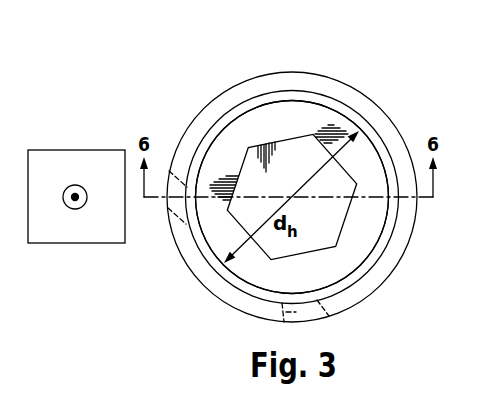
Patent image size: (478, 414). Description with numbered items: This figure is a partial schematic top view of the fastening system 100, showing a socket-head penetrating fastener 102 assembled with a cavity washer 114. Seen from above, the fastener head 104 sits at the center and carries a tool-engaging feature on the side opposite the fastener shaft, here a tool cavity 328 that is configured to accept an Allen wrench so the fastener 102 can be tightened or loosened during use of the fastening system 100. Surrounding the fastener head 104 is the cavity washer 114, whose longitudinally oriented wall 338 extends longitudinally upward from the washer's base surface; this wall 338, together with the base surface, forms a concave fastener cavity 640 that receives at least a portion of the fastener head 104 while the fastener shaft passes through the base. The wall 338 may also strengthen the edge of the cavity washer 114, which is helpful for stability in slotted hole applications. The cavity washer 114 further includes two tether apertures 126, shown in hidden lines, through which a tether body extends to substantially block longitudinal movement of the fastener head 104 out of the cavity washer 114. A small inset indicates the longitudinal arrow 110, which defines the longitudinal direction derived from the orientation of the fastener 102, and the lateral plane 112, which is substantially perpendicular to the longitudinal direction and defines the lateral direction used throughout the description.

The fastening system 100 is at (292, 188).
The penetrating fastener 102 is at (376, 265).
The fastener head 104 is at (364, 158).
The longitudinal arrow 110 is at (75, 195).
The lateral plane 112 is at (113, 238).
The cavity washer 114 is at (233, 74).
The tether apertures 126 is at (178, 214).
The tool cavity 328 is at (297, 157).
The longitudinally oriented wall 338 is at (229, 288).
The fastener cavity 640 is at (390, 226).